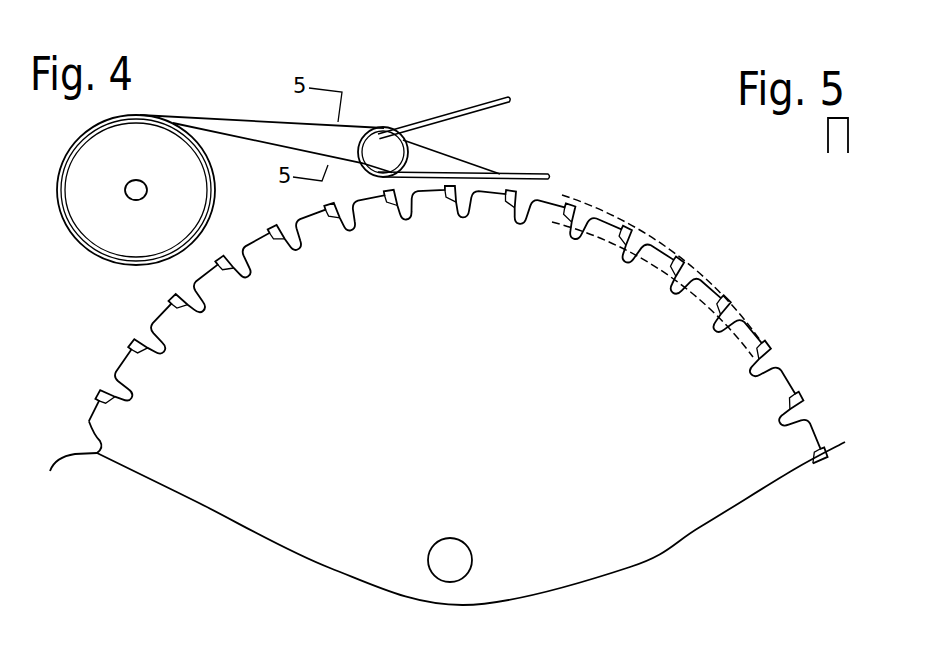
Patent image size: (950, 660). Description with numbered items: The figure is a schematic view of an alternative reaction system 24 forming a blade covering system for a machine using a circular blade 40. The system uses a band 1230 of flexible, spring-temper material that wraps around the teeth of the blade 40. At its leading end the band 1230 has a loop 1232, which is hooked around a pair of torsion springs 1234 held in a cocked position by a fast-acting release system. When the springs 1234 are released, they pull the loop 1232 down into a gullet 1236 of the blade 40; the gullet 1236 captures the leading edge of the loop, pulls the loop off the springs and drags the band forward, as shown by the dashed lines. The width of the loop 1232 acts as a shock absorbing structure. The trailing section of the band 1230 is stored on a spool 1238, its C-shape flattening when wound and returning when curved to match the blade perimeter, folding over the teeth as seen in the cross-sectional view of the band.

In FIG. 4, the belt guide assembly 24 is at (589, 76).
In FIG. 4, the blade 40 is at (409, 387).
In FIG. 4, the band 1230 is at (277, 118).
In FIG. 5, the band 1230 is at (827, 128).
In FIG. 4, the loop 1232 is at (500, 177).
In FIG. 4, the torsion springs 1234 is at (467, 107).
In FIG. 4, the gullet 1236 is at (755, 360).
In FIG. 4, the spool 1238 is at (161, 230).